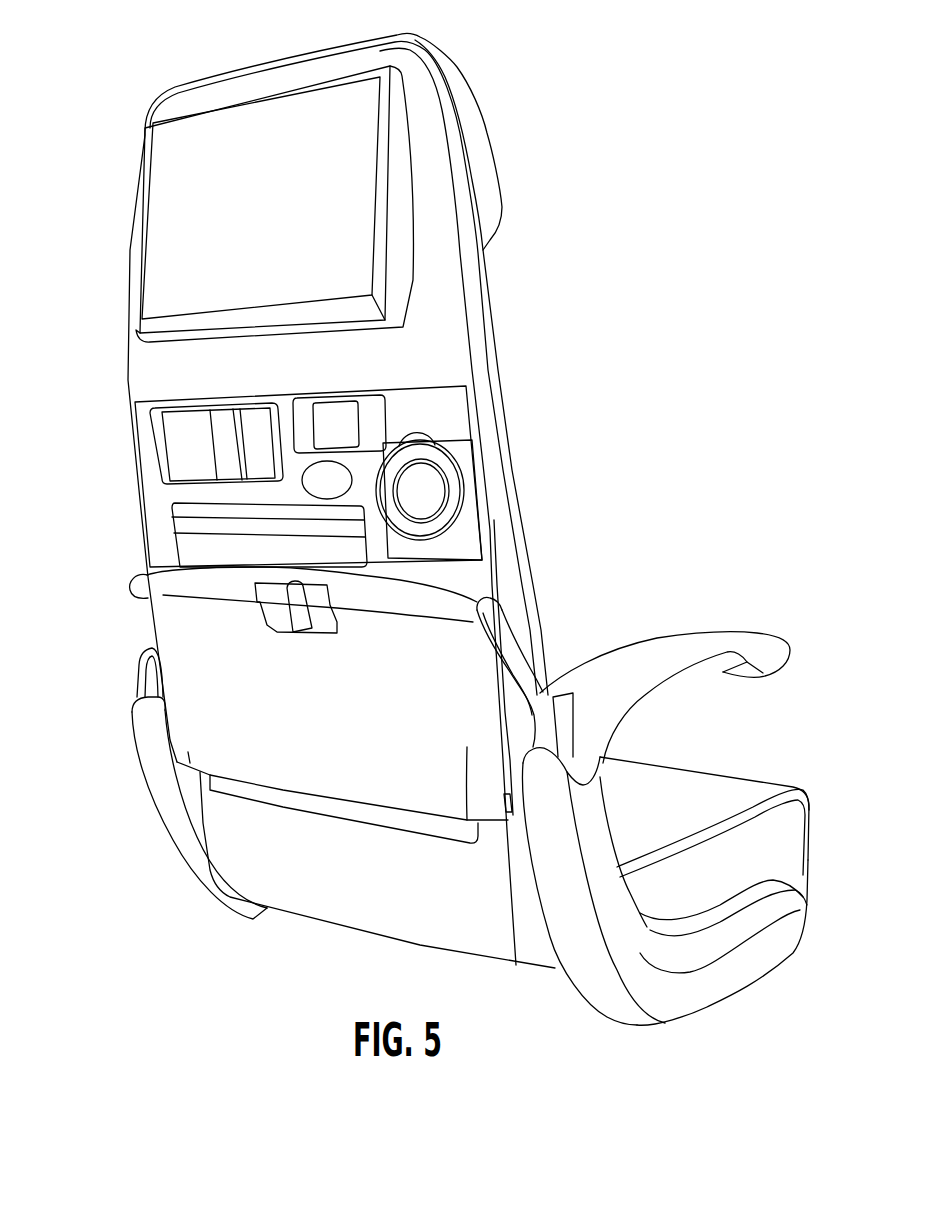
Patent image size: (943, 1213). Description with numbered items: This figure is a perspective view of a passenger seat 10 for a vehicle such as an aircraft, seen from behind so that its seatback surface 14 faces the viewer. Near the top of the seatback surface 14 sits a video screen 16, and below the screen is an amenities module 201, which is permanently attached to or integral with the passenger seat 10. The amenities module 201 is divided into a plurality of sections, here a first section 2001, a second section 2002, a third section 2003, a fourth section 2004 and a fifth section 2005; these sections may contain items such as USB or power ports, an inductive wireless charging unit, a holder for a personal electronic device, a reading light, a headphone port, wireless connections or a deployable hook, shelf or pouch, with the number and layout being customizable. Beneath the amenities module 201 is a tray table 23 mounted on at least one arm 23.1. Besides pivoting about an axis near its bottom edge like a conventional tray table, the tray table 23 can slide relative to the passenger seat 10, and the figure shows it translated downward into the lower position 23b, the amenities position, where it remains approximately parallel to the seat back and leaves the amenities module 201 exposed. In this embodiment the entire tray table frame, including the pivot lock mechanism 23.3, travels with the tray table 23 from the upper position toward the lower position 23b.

The passenger seat 10 is at (570, 133).
The video screen 16 is at (182, 205).
The amenities module 201 is at (167, 492).
The first section 2001 is at (180, 437).
The second section 2002 is at (340, 423).
The fifth section 2005 is at (372, 481).
The third section 2003 is at (427, 500).
The fourth section 2004 is at (197, 538).
The tray table 23 is at (226, 672).
The pivot lock mechanism 23.3 is at (300, 623).
The arm 23.1 is at (510, 635).
The lower position 23b is at (200, 735).
The seatback surface 14 is at (240, 837).